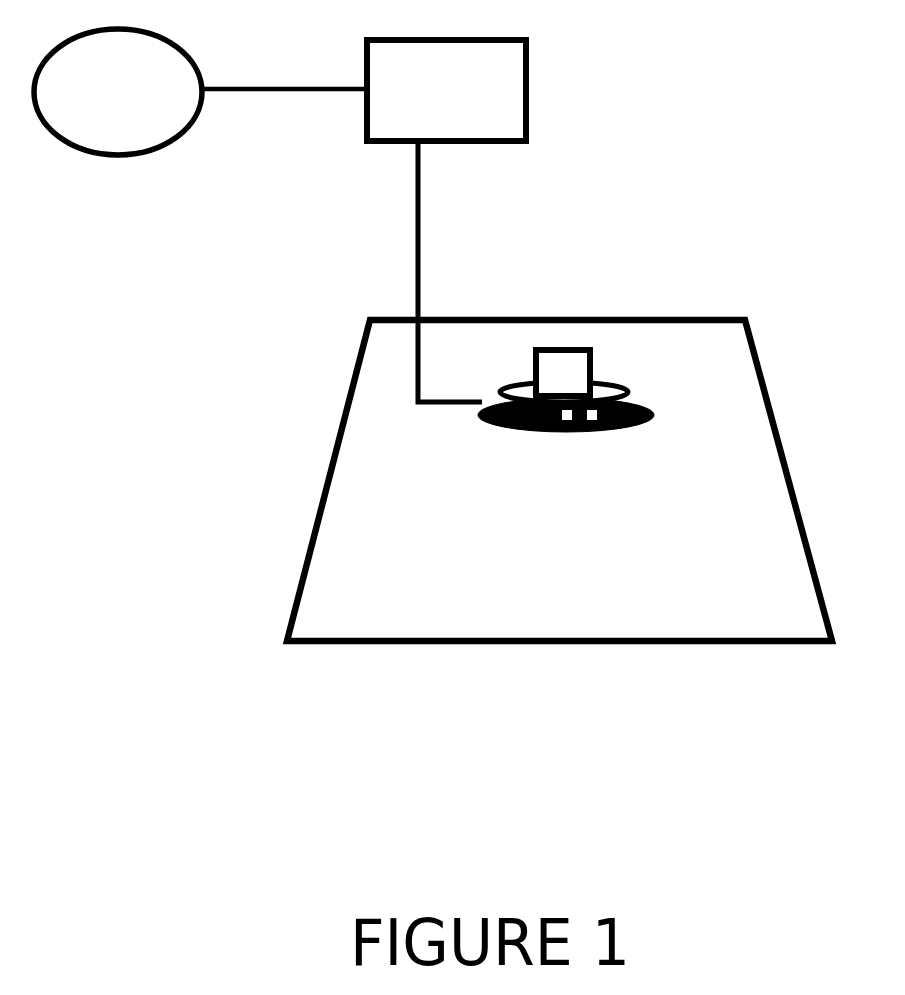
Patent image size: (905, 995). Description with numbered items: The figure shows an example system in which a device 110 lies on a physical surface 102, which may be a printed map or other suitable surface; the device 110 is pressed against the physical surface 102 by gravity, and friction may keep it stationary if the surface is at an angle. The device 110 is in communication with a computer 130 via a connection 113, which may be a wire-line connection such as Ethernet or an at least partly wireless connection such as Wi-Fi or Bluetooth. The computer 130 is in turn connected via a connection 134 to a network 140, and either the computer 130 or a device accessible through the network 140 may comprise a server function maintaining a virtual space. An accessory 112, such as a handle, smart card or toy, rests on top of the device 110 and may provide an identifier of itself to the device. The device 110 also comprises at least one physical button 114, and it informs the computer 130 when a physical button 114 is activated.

The physical surface 102 is at (320, 493).
The device 110 is at (587, 423).
The accessory 112 is at (593, 362).
The connection 113 is at (418, 232).
The physical button 114 is at (573, 431).
The computer 130 is at (446, 90).
The connection 134 is at (280, 88).
The network 140 is at (118, 92).